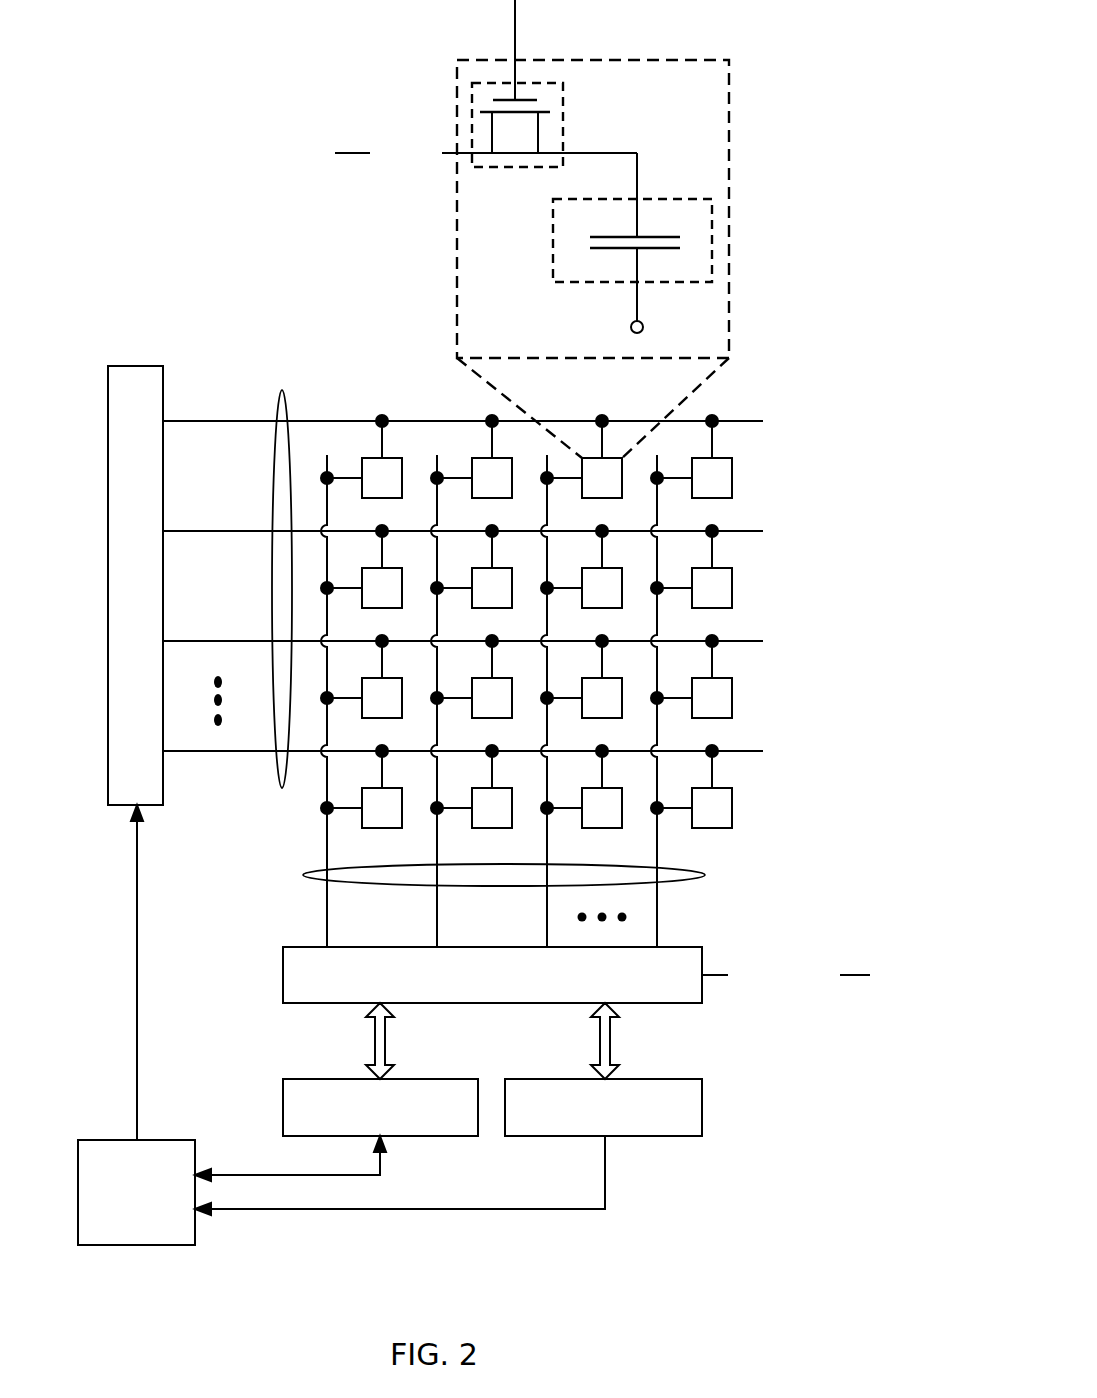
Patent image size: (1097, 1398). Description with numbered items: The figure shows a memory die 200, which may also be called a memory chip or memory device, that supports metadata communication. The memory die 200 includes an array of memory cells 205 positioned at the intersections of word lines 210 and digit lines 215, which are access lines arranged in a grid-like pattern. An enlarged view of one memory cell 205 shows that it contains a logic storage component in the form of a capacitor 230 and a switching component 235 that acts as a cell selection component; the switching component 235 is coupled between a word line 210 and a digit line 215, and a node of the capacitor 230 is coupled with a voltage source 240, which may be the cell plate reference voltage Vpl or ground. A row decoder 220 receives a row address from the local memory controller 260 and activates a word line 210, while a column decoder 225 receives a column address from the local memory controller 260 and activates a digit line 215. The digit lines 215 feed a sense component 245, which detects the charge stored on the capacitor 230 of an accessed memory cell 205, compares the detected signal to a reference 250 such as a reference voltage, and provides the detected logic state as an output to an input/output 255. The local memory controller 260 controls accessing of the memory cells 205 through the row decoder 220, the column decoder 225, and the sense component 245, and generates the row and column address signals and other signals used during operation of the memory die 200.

The memory die 200 is at (712, 1267).
The memory cell 205 is at (731, 587).
The word line 210 is at (282, 392).
The digit line 215 is at (705, 875).
The row decoder 220 is at (108, 722).
The column decoder 225 is at (395, 1079).
The capacitor 230 is at (553, 255).
The switching component 235 is at (563, 125).
The voltage source 240 is at (643, 325).
The sense component 245 is at (330, 1003).
The reference 250 is at (858, 976).
The input/output 255 is at (643, 1079).
The local memory controller 260 is at (130, 1245).